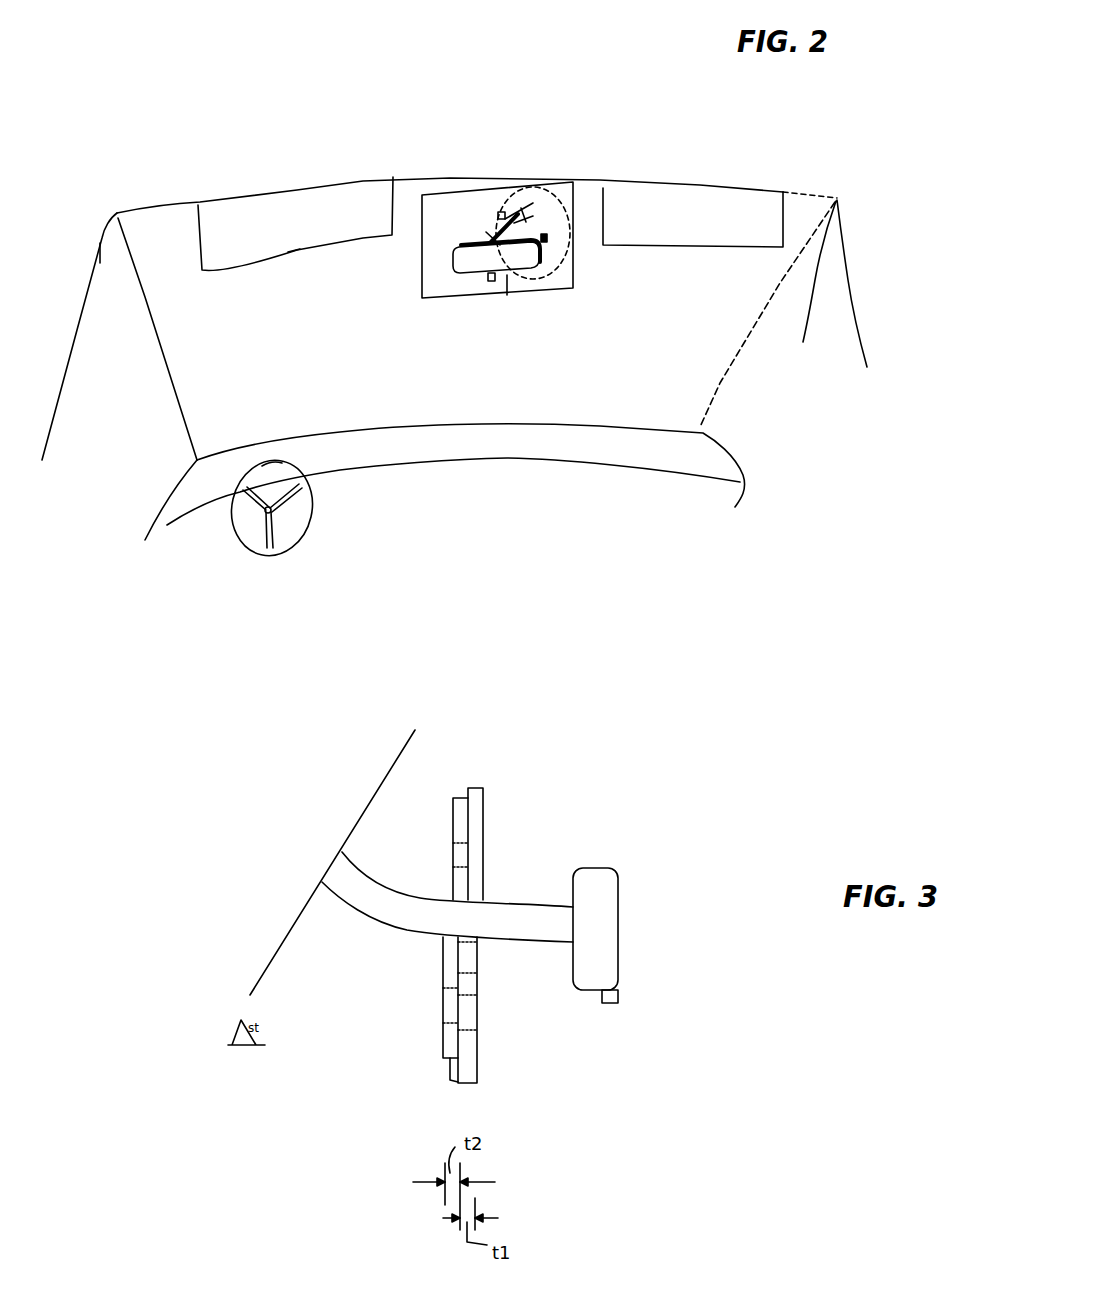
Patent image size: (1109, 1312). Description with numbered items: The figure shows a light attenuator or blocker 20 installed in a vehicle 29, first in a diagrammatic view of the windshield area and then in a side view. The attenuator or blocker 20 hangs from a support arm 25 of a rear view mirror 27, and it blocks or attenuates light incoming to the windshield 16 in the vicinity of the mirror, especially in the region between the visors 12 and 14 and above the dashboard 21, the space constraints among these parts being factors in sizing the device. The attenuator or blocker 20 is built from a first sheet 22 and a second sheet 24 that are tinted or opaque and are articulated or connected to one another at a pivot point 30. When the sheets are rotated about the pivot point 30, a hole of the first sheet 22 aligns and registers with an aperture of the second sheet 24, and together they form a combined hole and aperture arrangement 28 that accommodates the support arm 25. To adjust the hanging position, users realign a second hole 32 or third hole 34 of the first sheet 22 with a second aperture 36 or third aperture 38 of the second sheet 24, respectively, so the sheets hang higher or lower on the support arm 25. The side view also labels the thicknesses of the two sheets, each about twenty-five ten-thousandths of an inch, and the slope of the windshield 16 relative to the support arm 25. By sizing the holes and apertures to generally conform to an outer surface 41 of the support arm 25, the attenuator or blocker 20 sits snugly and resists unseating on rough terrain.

In FIG. 2, the visor 12 is at (362, 192).
In FIG. 2, the visor 14 is at (775, 195).
In FIG. 2, the windshield 16 is at (705, 368).
In FIG. 3, the windshield 16 is at (417, 745).
In FIG. 2, the attenuator or blocker 20 is at (561, 182).
In FIG. 3, the attenuator or blocker 20 is at (492, 842).
In FIG. 2, the dashboard 21 is at (553, 433).
In FIG. 2, the first sheet 22 is at (507, 295).
In FIG. 3, the first sheet 22 is at (475, 788).
In FIG. 2, the second sheet 24 is at (571, 250).
In FIG. 3, the second sheet 24 is at (443, 950).
In FIG. 2, the support arm 25 is at (494, 245).
In FIG. 3, the support arm 25 is at (352, 904).
In FIG. 2, the rear view mirror 27 is at (453, 270).
In FIG. 3, the rear view mirror 27 is at (597, 868).
In FIG. 2, the combined hole and aperture arrangement 28 is at (489, 255).
In FIG. 3, the combined hole and aperture arrangement 28 is at (485, 900).
In FIG. 2, the vehicle 29 is at (133, 207).
In FIG. 2, the pivot point 30 is at (544, 233).
In FIG. 3, the second hole 32 is at (479, 962).
In FIG. 3, the third hole 34 is at (479, 1018).
In FIG. 3, the second aperture 36 is at (443, 988).
In FIG. 3, the third aperture 38 is at (452, 853).
In FIG. 3, the outer surface 41 is at (547, 933).